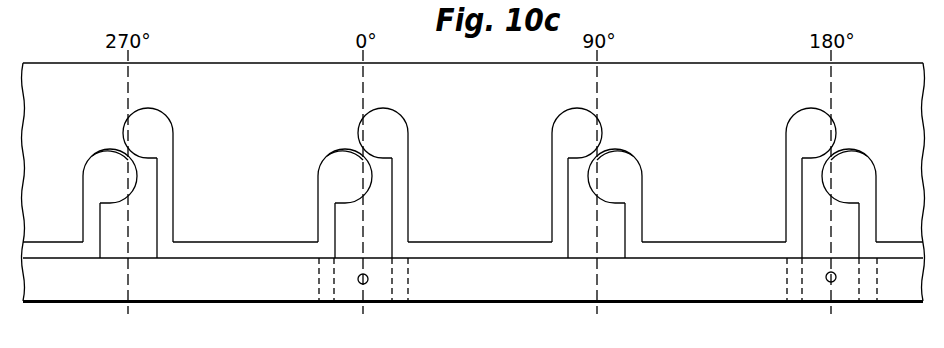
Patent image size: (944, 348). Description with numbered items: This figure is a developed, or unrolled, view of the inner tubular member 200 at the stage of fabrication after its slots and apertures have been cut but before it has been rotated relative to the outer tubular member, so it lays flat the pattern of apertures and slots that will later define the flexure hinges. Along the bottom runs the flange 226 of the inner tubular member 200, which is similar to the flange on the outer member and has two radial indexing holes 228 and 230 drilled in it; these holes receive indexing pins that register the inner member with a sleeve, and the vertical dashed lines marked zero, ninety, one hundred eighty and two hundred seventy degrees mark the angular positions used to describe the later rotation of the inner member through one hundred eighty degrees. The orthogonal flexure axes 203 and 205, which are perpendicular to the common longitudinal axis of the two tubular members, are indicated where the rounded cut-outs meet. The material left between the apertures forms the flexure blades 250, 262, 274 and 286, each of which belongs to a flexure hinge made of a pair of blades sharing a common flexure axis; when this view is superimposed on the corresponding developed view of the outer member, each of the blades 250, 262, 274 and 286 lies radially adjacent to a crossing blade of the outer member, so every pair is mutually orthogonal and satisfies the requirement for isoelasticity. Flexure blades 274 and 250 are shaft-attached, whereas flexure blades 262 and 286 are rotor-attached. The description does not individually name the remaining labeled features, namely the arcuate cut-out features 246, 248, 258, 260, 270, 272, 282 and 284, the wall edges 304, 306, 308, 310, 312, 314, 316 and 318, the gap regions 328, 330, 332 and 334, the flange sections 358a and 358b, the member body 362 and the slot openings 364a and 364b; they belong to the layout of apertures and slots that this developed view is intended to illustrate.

The inner tubular member 200 is at (715, 309).
The flexure axis 203 is at (363, 155).
The flexure axis 205 is at (128, 155).
The flange 226 is at (242, 298).
The radial indexing hole 228 is at (367, 283).
The radial indexing hole 230 is at (827, 282).
The lower hook lobe 246 is at (325, 168).
The upper hook lobe 248 is at (393, 120).
The flexure blade 250 is at (350, 147).
The upper hook lobe 258 is at (562, 125).
The lower hook lobe 260 is at (635, 168).
The flexure blade 262 is at (613, 150).
The upper hook lobe 270 is at (800, 118).
The lower hook lobe 272 is at (870, 168).
The flexure blade 274 is at (843, 147).
The lower hook lobe 282 is at (90, 172).
The upper hook lobe 284 is at (157, 120).
The flexure blade 286 is at (118, 148).
The side wall 304 is at (318, 212).
The side wall 306 is at (409, 187).
The side wall 308 is at (555, 200).
The side wall 310 is at (638, 227).
The side wall 312 is at (787, 197).
The side wall 314 is at (870, 223).
The side wall 316 is at (84, 212).
The side wall 318 is at (175, 200).
The gap 328 is at (484, 252).
The gap 330 is at (694, 252).
The gap 332 is at (55, 255).
The gap 334 is at (242, 253).
The slot region 358a is at (352, 243).
The slot region 358b is at (848, 240).
The upper body 362 is at (245, 78).
The slot 364a is at (605, 237).
The slot 364b is at (118, 247).